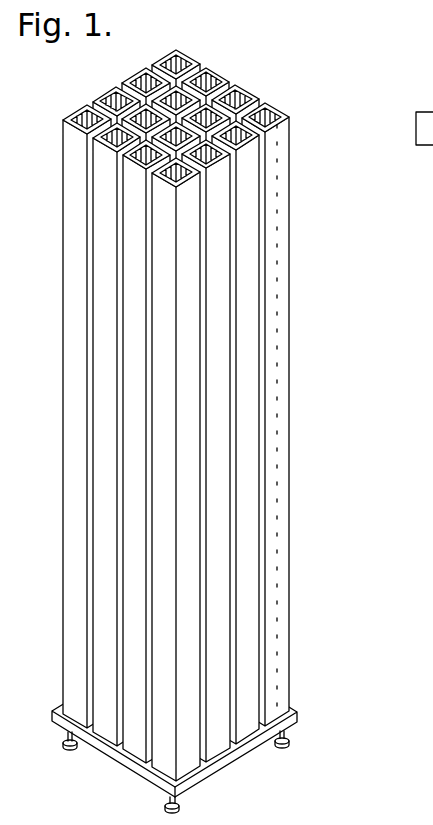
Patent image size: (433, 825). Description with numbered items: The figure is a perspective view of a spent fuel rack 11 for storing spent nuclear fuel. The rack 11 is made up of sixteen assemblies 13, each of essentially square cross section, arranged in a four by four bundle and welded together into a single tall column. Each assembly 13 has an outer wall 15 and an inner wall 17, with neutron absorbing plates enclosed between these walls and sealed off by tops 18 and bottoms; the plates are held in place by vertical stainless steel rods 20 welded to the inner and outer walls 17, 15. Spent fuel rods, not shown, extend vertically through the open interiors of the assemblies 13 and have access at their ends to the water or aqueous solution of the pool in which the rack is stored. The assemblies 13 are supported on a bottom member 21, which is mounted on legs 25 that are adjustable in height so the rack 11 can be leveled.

The spent fuel rack 11 is at (226, 415).
The assembly 13 is at (328, 394).
The outer wall 15 is at (289, 454).
The inner wall 17 is at (284, 113).
The top 18 is at (79, 110).
The vertical stainless steel rod 20 is at (373, 824).
The bottom member 21 is at (112, 753).
The leg 25 is at (180, 799).